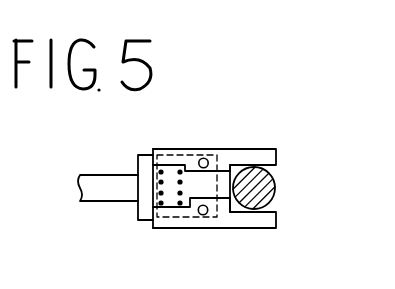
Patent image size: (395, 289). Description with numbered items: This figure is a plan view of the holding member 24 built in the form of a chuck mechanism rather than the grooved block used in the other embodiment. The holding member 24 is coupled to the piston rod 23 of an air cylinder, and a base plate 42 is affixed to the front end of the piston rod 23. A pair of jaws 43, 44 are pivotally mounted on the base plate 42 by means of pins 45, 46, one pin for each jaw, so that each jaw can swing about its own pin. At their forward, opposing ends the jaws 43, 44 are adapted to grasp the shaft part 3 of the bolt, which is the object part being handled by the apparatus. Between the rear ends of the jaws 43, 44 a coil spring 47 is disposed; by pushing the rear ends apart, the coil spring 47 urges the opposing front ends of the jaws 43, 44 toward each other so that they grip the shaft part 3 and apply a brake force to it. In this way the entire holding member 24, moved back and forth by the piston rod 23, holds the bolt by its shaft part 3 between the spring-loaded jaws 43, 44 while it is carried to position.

The shaft part 3 is at (276, 195).
The piston rod 23 is at (93, 175).
The holding member 24 is at (290, 166).
The base plate 42 is at (138, 213).
The jaw 43 is at (261, 149).
The jaw 44 is at (261, 228).
The pin 45 is at (204, 158).
The pin 46 is at (203, 215).
The coil spring 47 is at (160, 182).